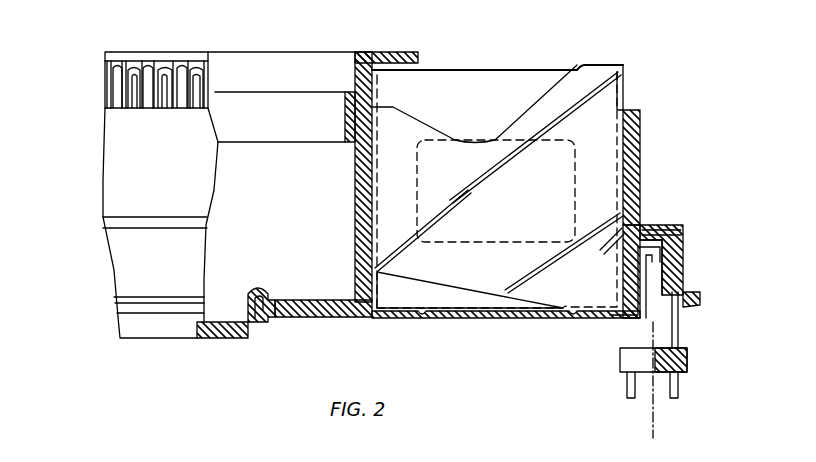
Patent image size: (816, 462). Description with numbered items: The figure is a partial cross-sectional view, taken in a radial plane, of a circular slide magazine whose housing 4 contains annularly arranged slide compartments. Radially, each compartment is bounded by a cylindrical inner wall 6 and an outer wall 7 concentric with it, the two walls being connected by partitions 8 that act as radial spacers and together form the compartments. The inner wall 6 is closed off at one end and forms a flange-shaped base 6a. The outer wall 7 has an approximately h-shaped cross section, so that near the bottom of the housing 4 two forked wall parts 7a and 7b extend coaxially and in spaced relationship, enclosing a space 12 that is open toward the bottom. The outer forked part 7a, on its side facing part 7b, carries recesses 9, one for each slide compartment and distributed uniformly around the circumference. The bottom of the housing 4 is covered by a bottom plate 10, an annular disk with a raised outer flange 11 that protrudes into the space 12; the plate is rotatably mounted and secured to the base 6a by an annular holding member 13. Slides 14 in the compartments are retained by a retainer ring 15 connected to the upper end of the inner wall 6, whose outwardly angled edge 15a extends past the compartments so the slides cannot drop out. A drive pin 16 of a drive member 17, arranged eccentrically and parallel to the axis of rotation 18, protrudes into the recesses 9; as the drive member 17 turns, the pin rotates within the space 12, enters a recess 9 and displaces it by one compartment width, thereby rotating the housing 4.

The housing 4 is at (648, 86).
The inner wall 6 is at (358, 237).
The flange-shaped base 6a is at (320, 300).
The outer wall 7 is at (640, 148).
The forked wall part 7a is at (681, 256).
The forked wall part 7b is at (627, 262).
The partitions 8 is at (597, 70).
The recesses 9 is at (688, 273).
The bottom plate 10 is at (472, 320).
The raised outer flange 11 is at (638, 281).
The space 12 is at (660, 231).
The annular holding member 13 is at (271, 321).
The slides 14 is at (130, 90).
The retainer ring 15 is at (275, 62).
The outwardly angled edge 15a is at (400, 52).
The drive pin 16 is at (680, 326).
The drive member 17 is at (620, 364).
The axis of rotation 18 is at (655, 417).